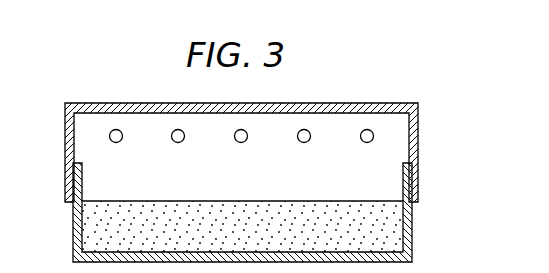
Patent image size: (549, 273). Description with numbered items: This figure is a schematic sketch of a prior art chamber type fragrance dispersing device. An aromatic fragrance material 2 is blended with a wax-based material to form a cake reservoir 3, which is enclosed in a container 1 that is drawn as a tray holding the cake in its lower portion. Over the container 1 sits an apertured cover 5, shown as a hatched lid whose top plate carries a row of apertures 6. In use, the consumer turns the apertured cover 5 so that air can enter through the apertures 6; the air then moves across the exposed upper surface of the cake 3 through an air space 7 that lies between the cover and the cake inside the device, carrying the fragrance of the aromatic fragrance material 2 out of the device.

The container 1 is at (421, 218).
The aromatic fragrance material 2 is at (270, 238).
The cake reservoir 3 is at (388, 237).
The apertured cover 5 is at (353, 103).
The apertures 6 is at (176, 129).
The air space 7 is at (388, 131).